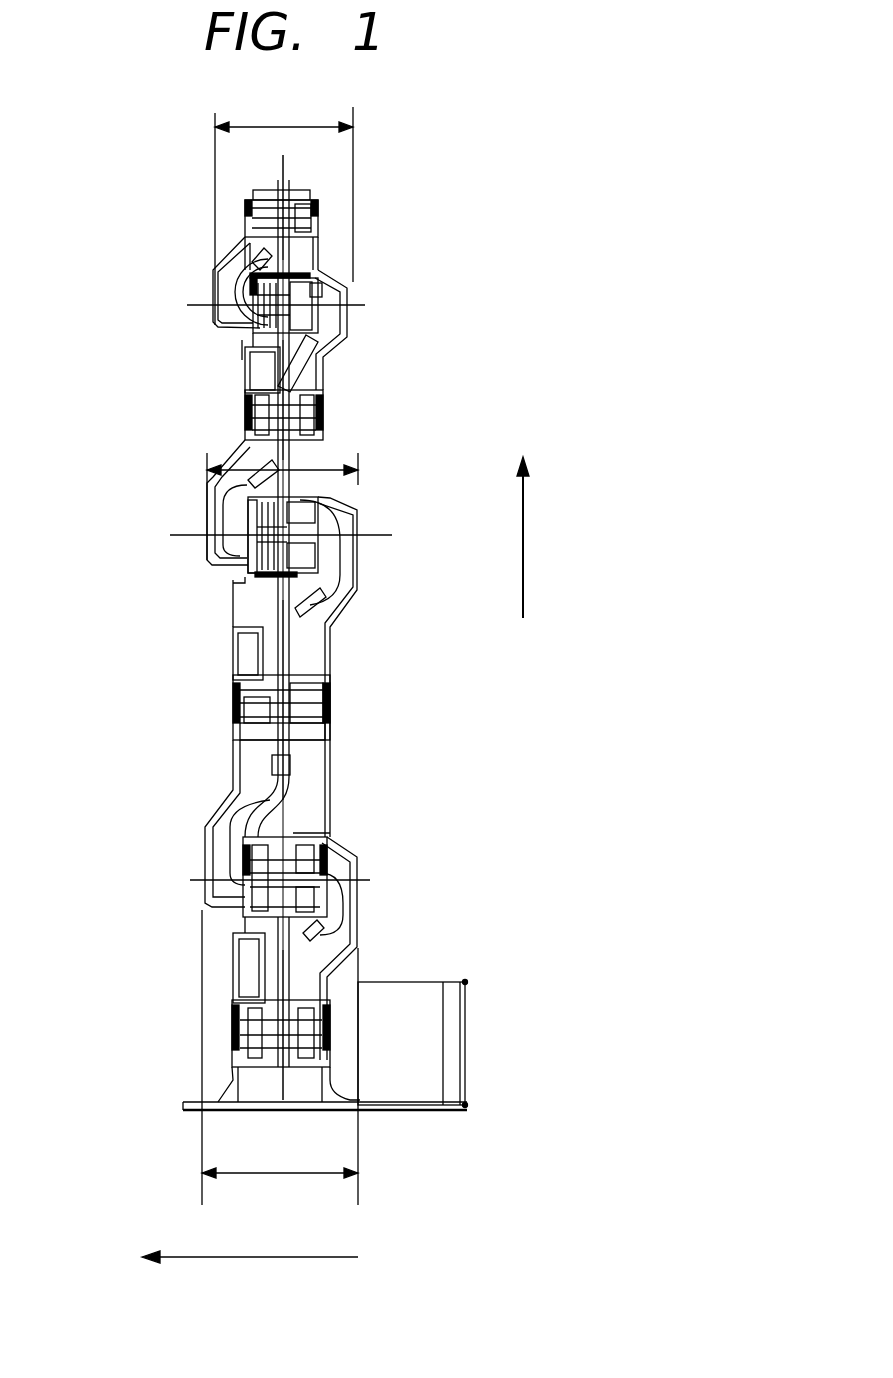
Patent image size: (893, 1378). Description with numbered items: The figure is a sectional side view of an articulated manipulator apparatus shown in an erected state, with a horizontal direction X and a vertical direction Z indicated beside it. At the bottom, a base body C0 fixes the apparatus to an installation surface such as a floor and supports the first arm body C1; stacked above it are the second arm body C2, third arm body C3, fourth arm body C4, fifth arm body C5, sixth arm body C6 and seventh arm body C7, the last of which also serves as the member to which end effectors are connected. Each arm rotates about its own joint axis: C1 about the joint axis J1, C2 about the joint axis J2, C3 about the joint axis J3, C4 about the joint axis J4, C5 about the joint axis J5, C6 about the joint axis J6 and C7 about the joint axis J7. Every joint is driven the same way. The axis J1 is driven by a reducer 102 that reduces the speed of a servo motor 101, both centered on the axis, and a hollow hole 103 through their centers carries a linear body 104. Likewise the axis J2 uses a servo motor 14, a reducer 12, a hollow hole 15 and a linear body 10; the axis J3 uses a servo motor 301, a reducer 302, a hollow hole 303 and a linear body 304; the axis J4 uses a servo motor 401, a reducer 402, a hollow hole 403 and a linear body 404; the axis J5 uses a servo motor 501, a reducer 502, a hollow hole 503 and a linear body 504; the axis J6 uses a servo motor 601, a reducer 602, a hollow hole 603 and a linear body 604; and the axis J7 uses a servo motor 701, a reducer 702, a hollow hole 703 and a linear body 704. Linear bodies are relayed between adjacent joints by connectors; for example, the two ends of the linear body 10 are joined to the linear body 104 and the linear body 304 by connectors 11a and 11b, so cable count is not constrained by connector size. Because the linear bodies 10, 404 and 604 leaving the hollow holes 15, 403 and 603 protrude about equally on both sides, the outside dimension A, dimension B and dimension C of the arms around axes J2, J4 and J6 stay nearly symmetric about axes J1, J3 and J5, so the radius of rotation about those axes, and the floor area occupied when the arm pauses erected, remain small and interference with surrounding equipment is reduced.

The linear body 10 is at (303, 853).
The connector 11a is at (292, 768).
The connector 11b is at (318, 938).
The reducer 12 is at (245, 905).
The servo motor 14 is at (310, 907).
The hollow hole 15 is at (265, 843).
The servo motor 101 is at (240, 1065).
The reducer 102 is at (233, 1025).
The hollow hole 103 is at (247, 1062).
The linear body 104 is at (300, 1050).
The servo motor 301 is at (227, 717).
The reducer 302 is at (233, 677).
The hollow hole 303 is at (240, 675).
The linear body 304 is at (285, 705).
The servo motor 401 is at (313, 513).
The reducer 402 is at (265, 560).
The hollow hole 403 is at (250, 520).
The linear body 404 is at (303, 540).
The servo motor 501 is at (303, 437).
The reducer 502 is at (330, 398).
The hollow hole 503 is at (250, 413).
The linear body 504 is at (250, 437).
The servo motor 601 is at (303, 287).
The reducer 602 is at (315, 277).
The hollow hole 603 is at (335, 316).
The linear body 604 is at (237, 283).
The servo motor 701 is at (303, 228).
The reducer 702 is at (305, 205).
The hollow hole 703 is at (250, 228).
The linear body 704 is at (250, 207).
The base body C0 is at (437, 977).
The first arm body C1 is at (245, 967).
The second arm body C2 is at (227, 752).
The third arm body C3 is at (357, 562).
The fourth arm body C4 is at (210, 478).
The fifth arm body C5 is at (330, 370).
The sixth arm body C6 is at (213, 292).
The seventh arm body C7 is at (250, 187).
The joint axis J1 is at (277, 1090).
The joint axis J2 is at (255, 862).
The joint axis J3 is at (257, 687).
The joint axis J4 is at (377, 535).
The joint axis J5 is at (247, 357).
The joint axis J6 is at (367, 305).
The joint axis J7 is at (312, 190).
The dimension A is at (280, 1057).
The dimension B is at (282, 498).
The dimension C is at (284, 211).
The X axis X is at (250, 1243).
The Z axis Z is at (537, 537).